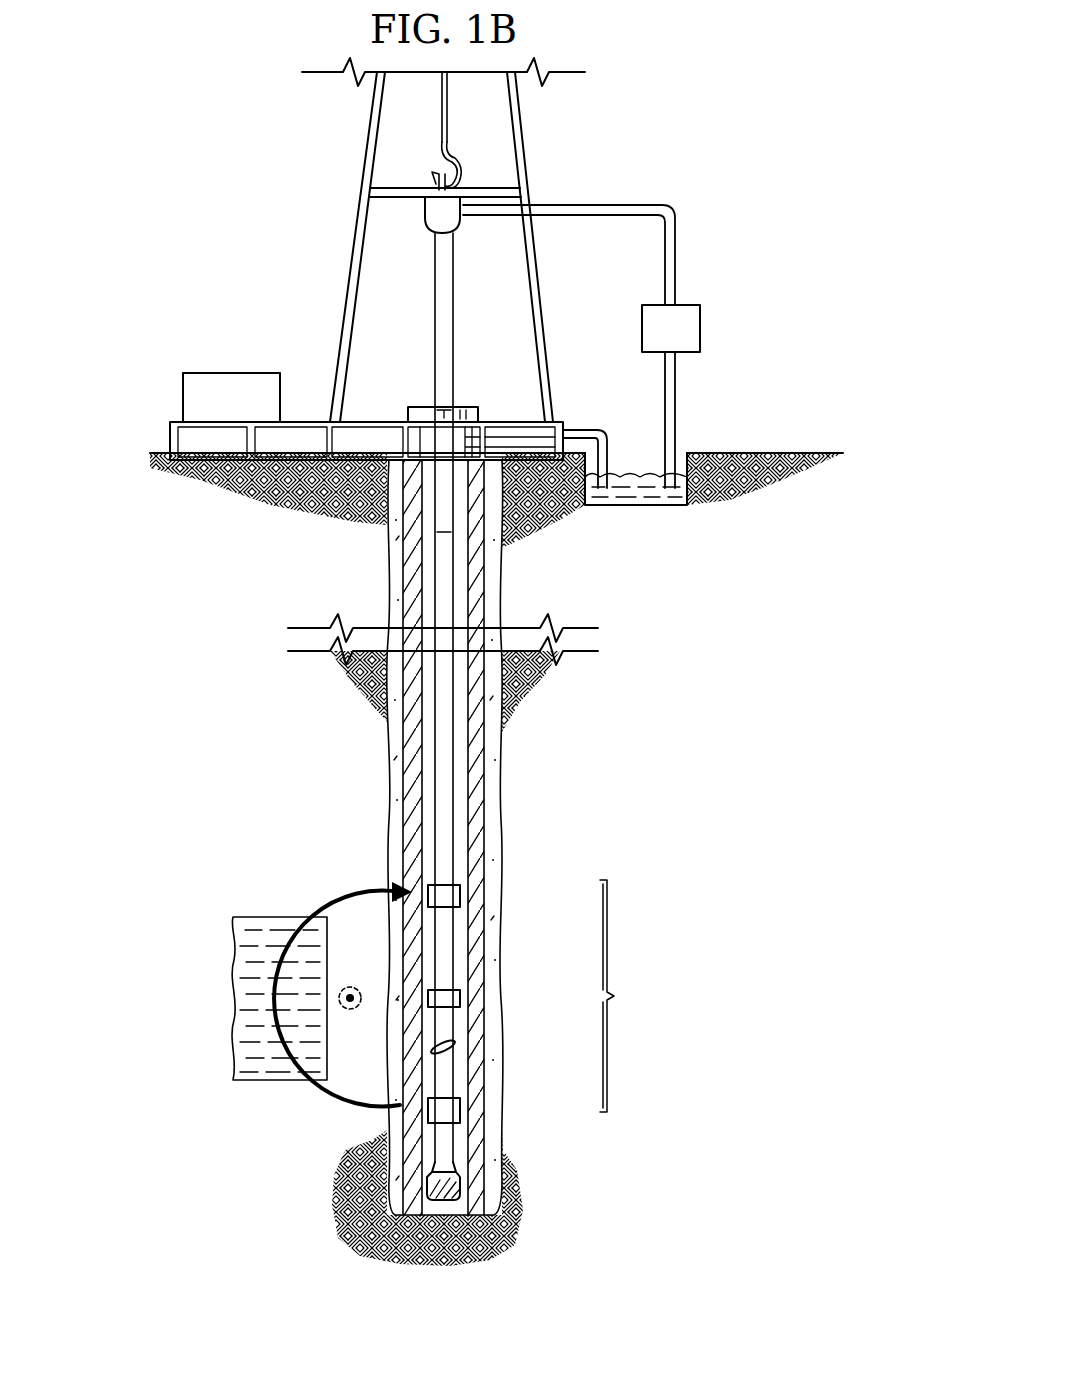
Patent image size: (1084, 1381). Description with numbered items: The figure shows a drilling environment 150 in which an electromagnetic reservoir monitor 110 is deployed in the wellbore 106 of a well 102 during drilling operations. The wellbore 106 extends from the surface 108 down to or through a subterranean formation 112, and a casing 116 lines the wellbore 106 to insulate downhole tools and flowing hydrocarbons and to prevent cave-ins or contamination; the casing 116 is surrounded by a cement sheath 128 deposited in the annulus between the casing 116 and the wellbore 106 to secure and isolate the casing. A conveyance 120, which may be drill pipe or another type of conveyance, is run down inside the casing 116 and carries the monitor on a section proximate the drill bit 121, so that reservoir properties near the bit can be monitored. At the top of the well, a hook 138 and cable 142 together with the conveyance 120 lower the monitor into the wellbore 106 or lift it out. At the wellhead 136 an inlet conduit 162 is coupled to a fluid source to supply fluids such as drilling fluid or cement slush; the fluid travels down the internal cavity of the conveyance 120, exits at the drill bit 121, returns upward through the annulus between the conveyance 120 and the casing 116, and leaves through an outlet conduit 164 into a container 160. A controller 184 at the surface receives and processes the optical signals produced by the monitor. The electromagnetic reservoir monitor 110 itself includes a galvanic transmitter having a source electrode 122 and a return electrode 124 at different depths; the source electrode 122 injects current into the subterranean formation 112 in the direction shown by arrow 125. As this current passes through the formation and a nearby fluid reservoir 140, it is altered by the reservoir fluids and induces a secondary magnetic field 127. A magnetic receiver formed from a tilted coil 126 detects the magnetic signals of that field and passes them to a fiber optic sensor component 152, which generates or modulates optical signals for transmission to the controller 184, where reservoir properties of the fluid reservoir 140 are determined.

The well 102 is at (470, 400).
The wellbore 106 is at (505, 807).
The surface 108 is at (788, 453).
The electromagnetic reservoir monitor 110 is at (632, 996).
The subterranean formation 112 is at (707, 749).
The casing 116 is at (476, 860).
The conveyance 120 is at (434, 820).
The drill bit 121 is at (460, 1192).
The source electrode 122 is at (461, 1103).
The return electrode 124 is at (461, 894).
The arrow 125 is at (338, 894).
The tilted coil 126 is at (456, 1045).
The secondary magnetic field 127 is at (358, 1010).
The cement sheath 128 is at (496, 765).
The wellhead 136 is at (420, 406).
The hook 138 is at (460, 170).
The fluid reservoir 140 is at (235, 1025).
The cable 142 is at (440, 132).
The drilling environment 150 is at (290, 224).
The fiber optic sensor component 152 is at (461, 996).
The container 160 is at (634, 506).
The inlet conduit 162 is at (645, 205).
The outlet conduit 164 is at (576, 430).
The controller 184 is at (232, 372).